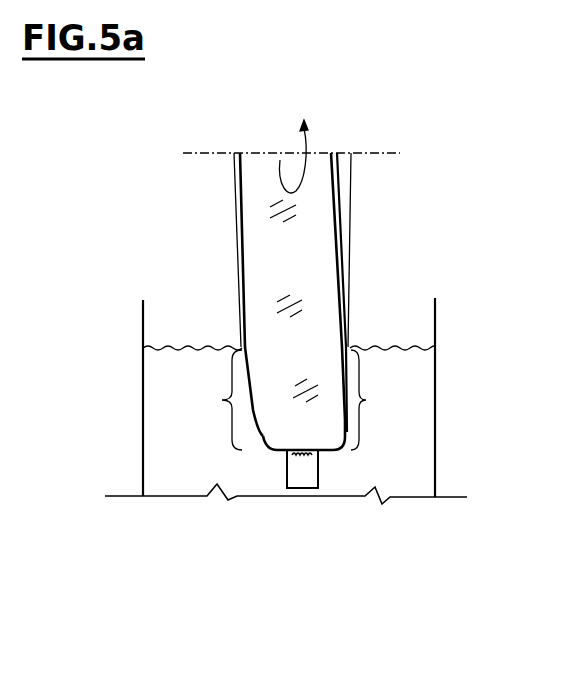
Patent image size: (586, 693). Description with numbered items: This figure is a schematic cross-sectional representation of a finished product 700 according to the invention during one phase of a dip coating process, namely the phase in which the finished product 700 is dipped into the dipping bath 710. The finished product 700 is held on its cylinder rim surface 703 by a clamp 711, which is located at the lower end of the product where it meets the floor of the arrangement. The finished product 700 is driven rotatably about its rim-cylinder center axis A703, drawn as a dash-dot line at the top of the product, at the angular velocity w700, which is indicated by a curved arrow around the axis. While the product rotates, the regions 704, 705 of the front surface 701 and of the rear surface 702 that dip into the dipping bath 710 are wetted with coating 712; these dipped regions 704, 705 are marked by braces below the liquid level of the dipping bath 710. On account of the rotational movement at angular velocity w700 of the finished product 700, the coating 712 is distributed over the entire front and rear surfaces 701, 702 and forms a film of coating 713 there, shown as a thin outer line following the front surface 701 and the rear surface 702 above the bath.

The finished product 700 is at (291, 301).
The front surface 701 is at (242, 304).
The rear surface 702 is at (332, 288).
The cylinder rim surface 703 is at (282, 452).
The region of the rear surface dipping into the dipping bath 704 is at (380, 400).
The region of the front surface dipping into the dipping bath 705 is at (208, 400).
The dipping bath 710 is at (168, 463).
The clamp 711 is at (303, 488).
The coating 712 is at (160, 387).
The film of coating 713 is at (333, 243).
The rim-cylinder center axis A703 is at (259, 153).
The angular velocity w700 is at (319, 143).